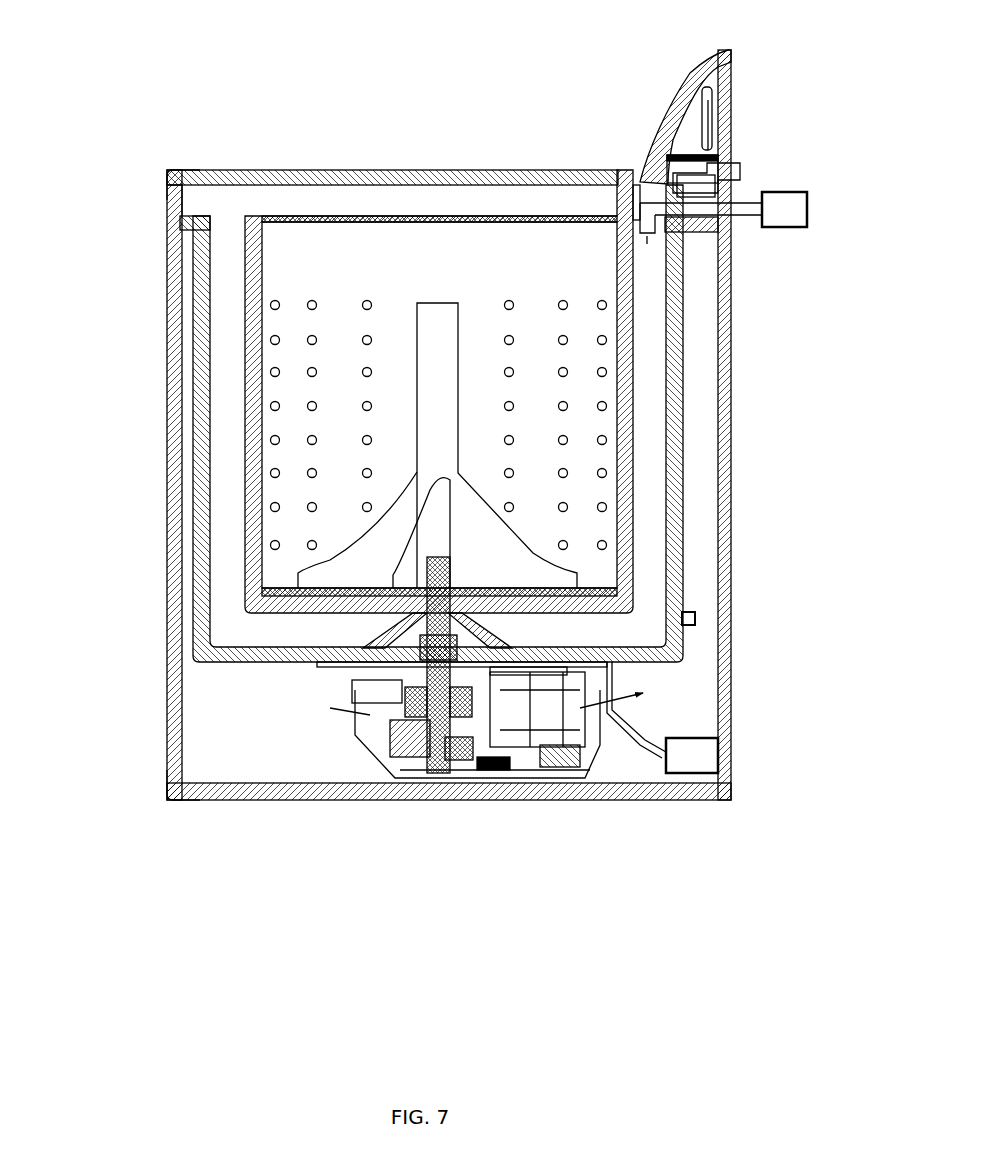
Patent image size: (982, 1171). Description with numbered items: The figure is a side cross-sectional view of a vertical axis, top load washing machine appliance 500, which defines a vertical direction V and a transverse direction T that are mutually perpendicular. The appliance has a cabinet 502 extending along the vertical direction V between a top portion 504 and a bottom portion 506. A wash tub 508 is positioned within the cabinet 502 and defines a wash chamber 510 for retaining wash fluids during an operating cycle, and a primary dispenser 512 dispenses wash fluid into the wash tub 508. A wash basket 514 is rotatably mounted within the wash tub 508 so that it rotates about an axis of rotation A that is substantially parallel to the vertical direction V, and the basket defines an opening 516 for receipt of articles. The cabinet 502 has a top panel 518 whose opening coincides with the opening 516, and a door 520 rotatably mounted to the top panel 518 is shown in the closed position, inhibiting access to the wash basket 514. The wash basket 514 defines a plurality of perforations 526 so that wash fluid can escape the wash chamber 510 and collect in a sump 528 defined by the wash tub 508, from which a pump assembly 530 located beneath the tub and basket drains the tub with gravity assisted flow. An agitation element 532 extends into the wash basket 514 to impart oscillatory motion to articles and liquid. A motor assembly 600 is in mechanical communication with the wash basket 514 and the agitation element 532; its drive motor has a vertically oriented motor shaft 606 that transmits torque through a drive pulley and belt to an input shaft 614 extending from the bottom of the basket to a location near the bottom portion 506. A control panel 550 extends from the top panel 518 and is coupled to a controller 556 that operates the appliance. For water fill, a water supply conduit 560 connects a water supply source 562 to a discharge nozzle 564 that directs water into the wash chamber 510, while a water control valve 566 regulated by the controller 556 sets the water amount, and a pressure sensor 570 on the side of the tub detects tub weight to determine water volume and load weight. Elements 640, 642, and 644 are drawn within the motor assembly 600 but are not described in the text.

The washing machine appliance 500 is at (196, 70).
The cabinet 502 is at (166, 288).
The top portion 504 is at (158, 180).
The bottom portion 506 is at (156, 798).
The wash tub 508 is at (683, 540).
The wash chamber 510 is at (226, 391).
The primary dispenser 512 is at (633, 200).
The wash basket 514 is at (243, 240).
The opening 516 is at (505, 218).
The top panel 518 is at (203, 170).
The door 520 is at (347, 177).
The perforations 526 is at (378, 300).
The sump 528 is at (296, 647).
The pump assembly 530 is at (649, 772).
The agitation element 532 is at (446, 302).
The control panel 550 is at (676, 90).
The controller 556 is at (738, 92).
The water supply conduit 560 is at (745, 222).
The water supply source 562 is at (784, 209).
The discharge nozzle 564 is at (650, 242).
The water control valve 566 is at (740, 203).
The pressure sensor 570 is at (697, 618).
The motor assembly 600 is at (346, 736).
The motor shaft 606 is at (530, 766).
The input shaft 614 is at (390, 765).
The bearing 640 is at (500, 762).
The rotor 642 is at (598, 766).
The stator 644 is at (582, 768).
The axis of rotation A is at (437, 760).
The vertical direction V is at (118, 366).
The transverse direction T is at (562, 883).